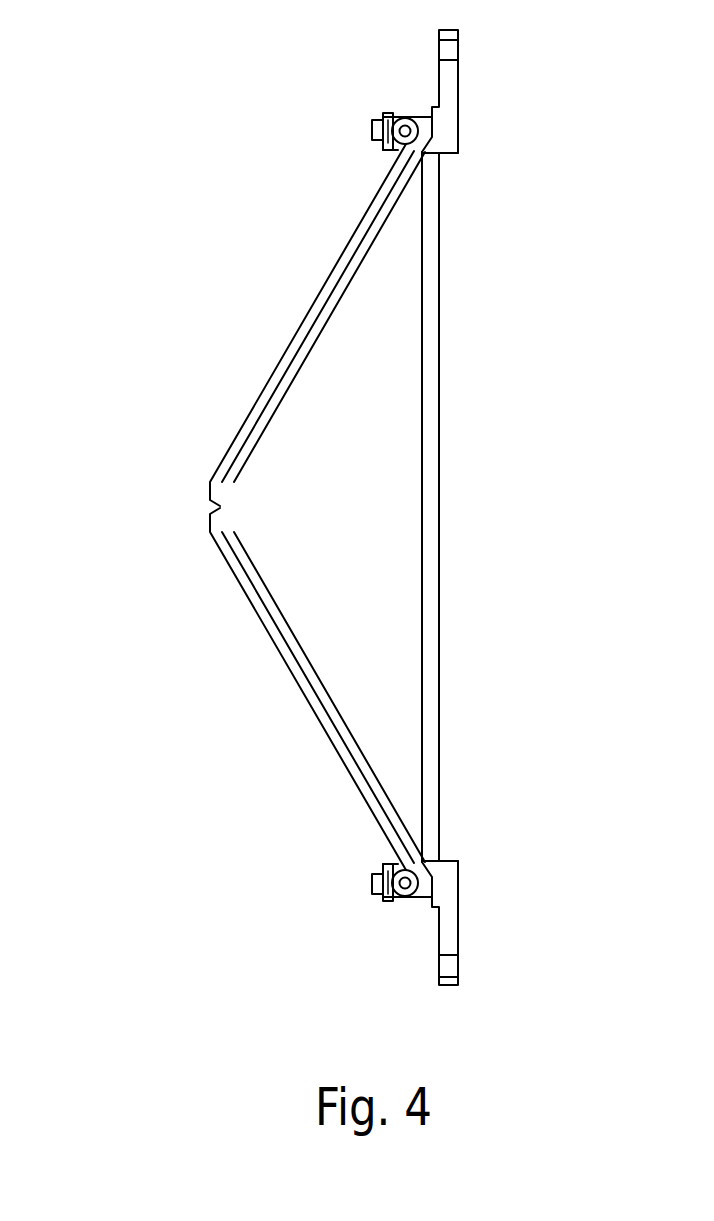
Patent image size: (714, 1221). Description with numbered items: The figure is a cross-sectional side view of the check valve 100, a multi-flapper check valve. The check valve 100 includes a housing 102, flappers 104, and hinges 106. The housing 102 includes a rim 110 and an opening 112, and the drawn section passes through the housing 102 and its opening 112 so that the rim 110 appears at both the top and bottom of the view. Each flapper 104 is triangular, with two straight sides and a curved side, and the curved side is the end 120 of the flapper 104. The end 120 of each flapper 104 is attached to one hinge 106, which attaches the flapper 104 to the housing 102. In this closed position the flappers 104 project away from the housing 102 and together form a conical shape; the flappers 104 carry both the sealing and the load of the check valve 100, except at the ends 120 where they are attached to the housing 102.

The check valve 100 is at (166, 130).
The housing 102 is at (456, 82).
The flappers 104 is at (290, 353).
The hinges 106 is at (394, 115).
The rim 110 is at (456, 918).
The opening 112 is at (448, 547).
The end 120 is at (405, 910).